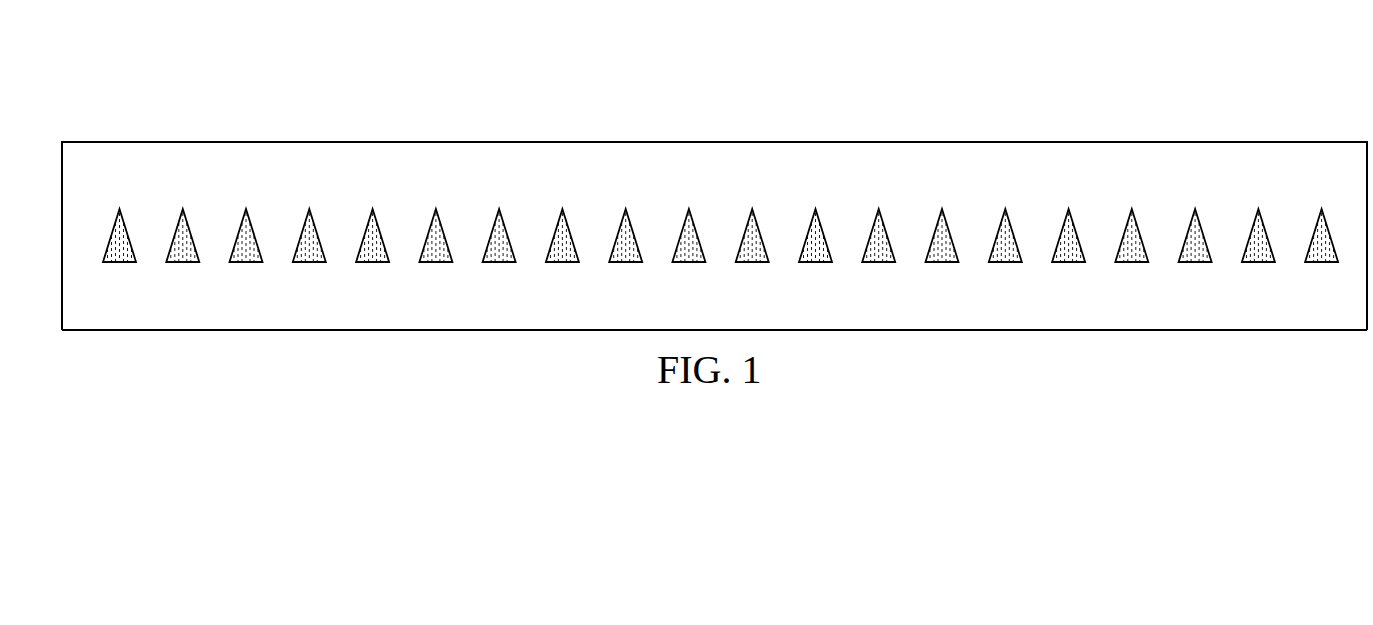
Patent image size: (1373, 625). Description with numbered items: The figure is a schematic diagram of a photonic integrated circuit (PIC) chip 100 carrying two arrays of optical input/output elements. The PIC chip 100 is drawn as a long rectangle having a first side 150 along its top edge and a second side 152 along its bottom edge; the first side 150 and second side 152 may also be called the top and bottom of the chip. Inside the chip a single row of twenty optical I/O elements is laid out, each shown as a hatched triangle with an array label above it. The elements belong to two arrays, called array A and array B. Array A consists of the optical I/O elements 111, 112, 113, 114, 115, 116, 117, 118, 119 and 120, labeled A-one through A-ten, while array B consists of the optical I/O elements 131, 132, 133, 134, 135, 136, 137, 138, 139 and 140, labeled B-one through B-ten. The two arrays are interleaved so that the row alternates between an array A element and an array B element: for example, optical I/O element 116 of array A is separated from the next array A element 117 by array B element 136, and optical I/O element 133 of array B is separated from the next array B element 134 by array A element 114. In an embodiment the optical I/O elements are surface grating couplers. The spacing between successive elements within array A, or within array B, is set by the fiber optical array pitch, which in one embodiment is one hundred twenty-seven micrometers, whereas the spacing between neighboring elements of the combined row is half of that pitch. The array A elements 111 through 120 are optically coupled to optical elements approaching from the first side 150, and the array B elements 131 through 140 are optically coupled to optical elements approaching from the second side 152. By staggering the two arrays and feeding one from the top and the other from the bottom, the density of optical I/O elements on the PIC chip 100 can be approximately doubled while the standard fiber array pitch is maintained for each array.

The photonic integrated circuit (PIC) chip 100 is at (558, 66).
The first side 150 is at (713, 140).
The second side 152 is at (1053, 330).
The optical I/O element A1 111 is at (114, 262).
The optical I/O element A2 112 is at (240, 262).
The optical I/O element A3 113 is at (367, 262).
The optical I/O element A4 114 is at (493, 262).
The optical I/O element A5 115 is at (620, 262).
The optical I/O element A6 116 is at (753, 262).
The optical I/O element A7 117 is at (880, 262).
The optical I/O element A8 118 is at (1006, 262).
The optical I/O element A9 119 is at (1133, 262).
The optical I/O element A10 120 is at (1259, 262).
The optical I/O element B1 131 is at (177, 262).
The optical I/O element B2 132 is at (303, 262).
The optical I/O element B3 133 is at (430, 262).
The optical I/O element B4 134 is at (556, 262).
The optical I/O element B5 135 is at (683, 262).
The optical I/O element B6 136 is at (816, 262).
The optical I/O element B7 137 is at (943, 262).
The optical I/O element B8 138 is at (1070, 262).
The optical I/O element B9 139 is at (1196, 262).
The optical I/O element B10 140 is at (1323, 262).